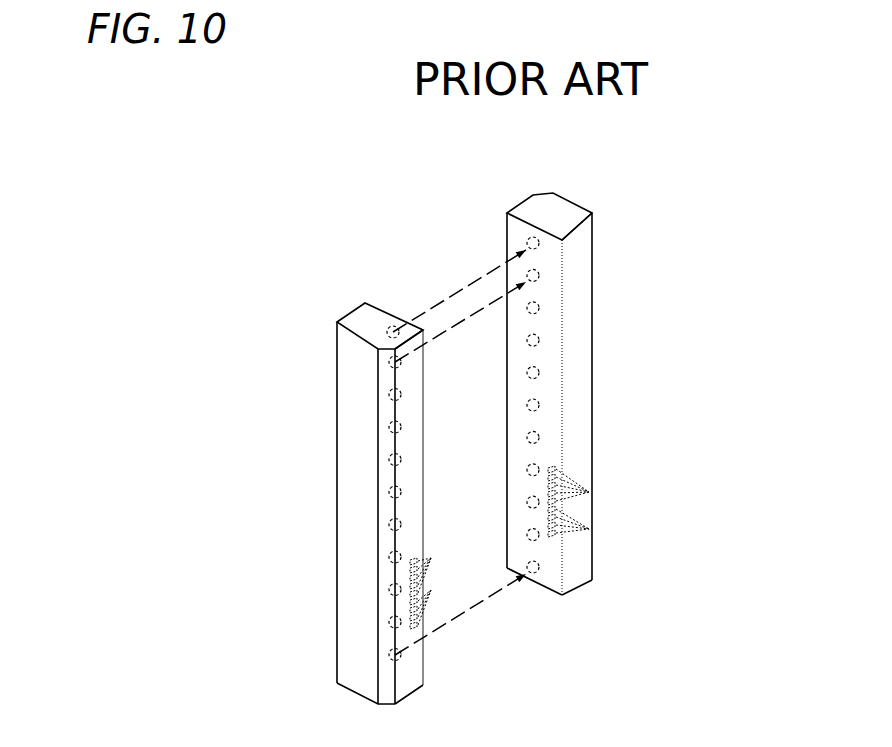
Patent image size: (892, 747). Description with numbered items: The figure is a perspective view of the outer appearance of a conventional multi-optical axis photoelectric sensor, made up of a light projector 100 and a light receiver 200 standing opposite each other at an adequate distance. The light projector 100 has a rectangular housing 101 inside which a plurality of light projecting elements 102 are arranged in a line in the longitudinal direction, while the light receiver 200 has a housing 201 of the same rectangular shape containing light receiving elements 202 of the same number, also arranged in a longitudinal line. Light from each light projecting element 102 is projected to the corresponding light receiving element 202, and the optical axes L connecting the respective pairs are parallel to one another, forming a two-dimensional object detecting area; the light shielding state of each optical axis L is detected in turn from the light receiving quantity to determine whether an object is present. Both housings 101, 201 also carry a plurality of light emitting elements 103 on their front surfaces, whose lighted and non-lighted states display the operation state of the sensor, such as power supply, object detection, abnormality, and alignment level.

The light projector 100 is at (348, 308).
The housing 101 is at (410, 688).
The light projecting elements 102 is at (404, 424).
The light emitting elements 103 is at (430, 560).
The light receiver 200 is at (518, 200).
The housing 201 is at (577, 578).
The light receiving elements 202 is at (526, 371).
The optical axes L is at (460, 451).